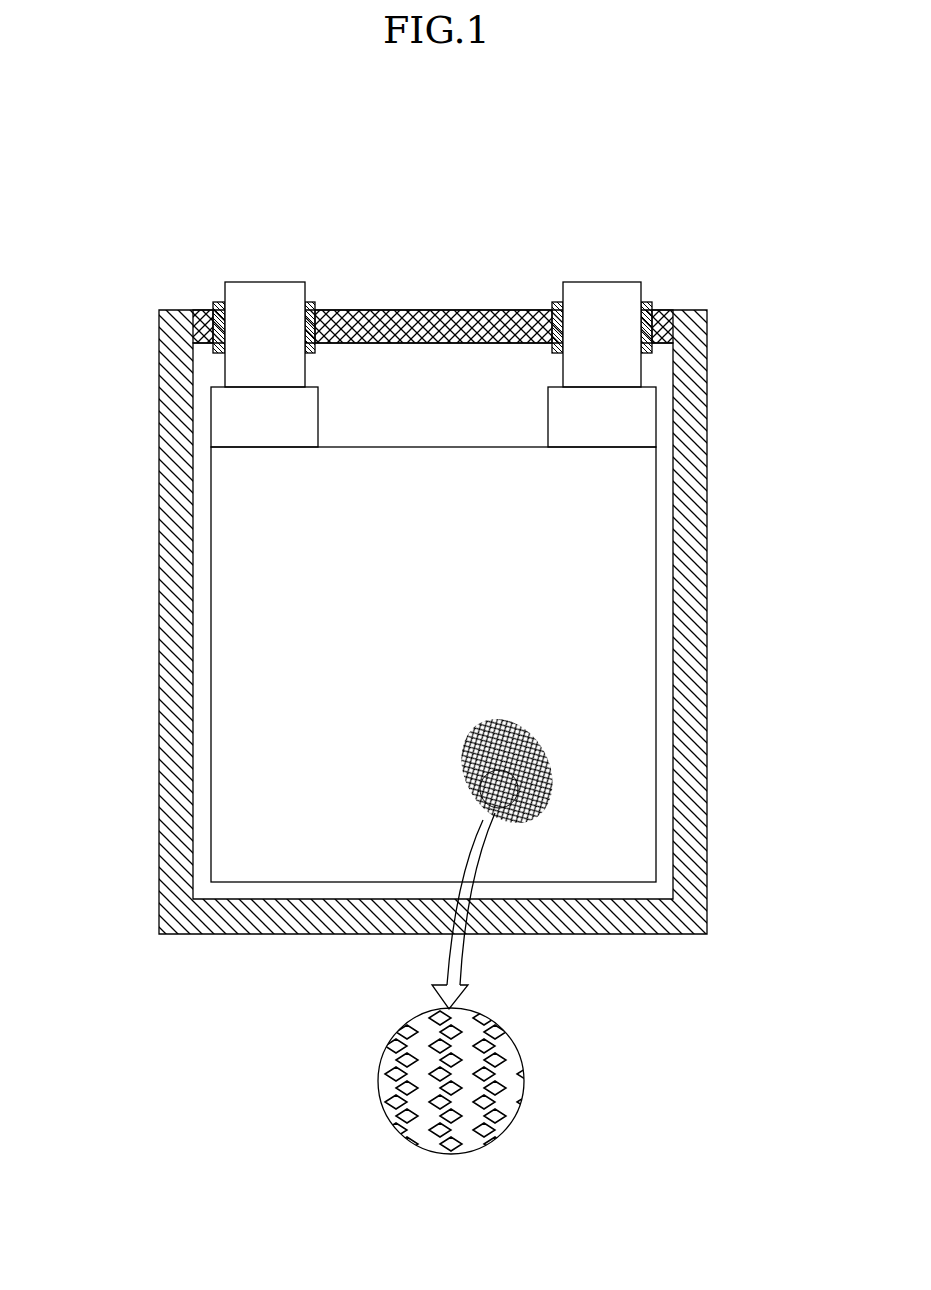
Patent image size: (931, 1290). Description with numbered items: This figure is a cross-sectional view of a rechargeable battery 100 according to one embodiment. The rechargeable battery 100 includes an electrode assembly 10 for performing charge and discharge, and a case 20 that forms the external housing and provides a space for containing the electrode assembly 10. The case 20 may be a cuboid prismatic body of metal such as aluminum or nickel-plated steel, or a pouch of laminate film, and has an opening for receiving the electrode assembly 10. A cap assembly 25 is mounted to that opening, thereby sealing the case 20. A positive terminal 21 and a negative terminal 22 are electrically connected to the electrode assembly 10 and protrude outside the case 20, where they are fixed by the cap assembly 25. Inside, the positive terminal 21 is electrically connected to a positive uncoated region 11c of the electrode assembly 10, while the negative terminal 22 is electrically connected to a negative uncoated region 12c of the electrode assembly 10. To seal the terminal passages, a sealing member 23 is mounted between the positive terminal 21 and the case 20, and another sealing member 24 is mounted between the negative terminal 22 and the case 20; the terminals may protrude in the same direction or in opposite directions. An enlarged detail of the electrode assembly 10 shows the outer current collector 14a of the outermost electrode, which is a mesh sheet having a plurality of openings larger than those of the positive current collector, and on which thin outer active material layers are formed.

The rechargeable battery 100 is at (452, 138).
The electrode assembly 10 is at (437, 683).
The positive uncoated region 11c is at (225, 426).
The negative uncoated region 12c is at (637, 420).
The outer current collector 14a is at (495, 1043).
The case 20 is at (690, 611).
The positive terminal 21 is at (262, 298).
The negative terminal 22 is at (604, 300).
The sealing member 23 is at (309, 301).
The sealing member 24 is at (553, 308).
The cap assembly 25 is at (370, 320).